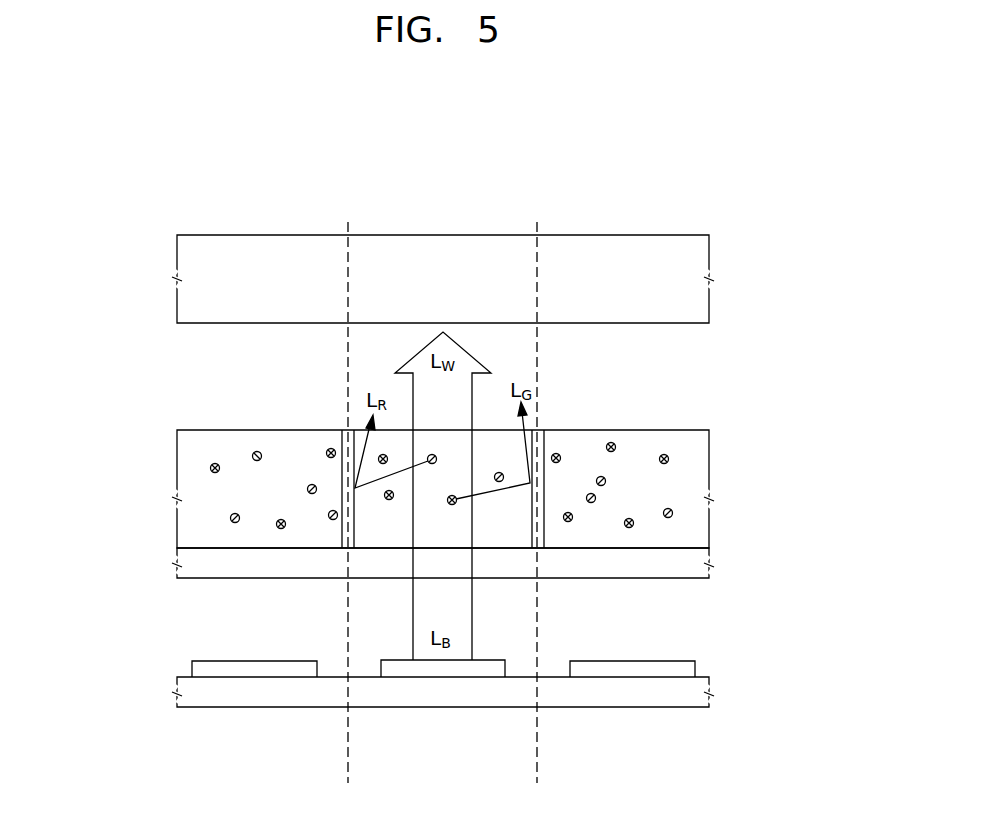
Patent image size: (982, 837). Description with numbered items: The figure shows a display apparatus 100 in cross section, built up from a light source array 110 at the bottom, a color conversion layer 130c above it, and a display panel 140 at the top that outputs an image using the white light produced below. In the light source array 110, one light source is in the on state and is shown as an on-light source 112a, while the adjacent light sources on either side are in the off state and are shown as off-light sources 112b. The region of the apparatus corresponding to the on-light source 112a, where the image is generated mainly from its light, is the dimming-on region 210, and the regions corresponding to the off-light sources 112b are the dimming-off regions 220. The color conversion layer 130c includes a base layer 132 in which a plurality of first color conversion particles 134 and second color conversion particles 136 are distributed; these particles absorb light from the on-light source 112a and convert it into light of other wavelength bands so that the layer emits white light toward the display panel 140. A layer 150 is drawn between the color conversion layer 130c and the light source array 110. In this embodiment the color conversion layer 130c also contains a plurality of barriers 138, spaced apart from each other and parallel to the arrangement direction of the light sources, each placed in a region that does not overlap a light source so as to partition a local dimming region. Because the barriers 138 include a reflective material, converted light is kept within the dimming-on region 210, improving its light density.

The display apparatus 100 is at (729, 181).
The light source array 110 is at (185, 702).
The on-light source 112a is at (500, 664).
The off-light source 112b is at (251, 666).
The color conversion layer 130c is at (167, 457).
The base layer 132 is at (185, 488).
The first color conversion particles 134 is at (453, 504).
The second color conversion particles 136 is at (432, 464).
The barrier 138 is at (343, 441).
The display panel 140 is at (185, 302).
The transparent layer 150 is at (185, 565).
The dimming-on region 210 is at (445, 743).
The dimming-off region 220 is at (439, 743).